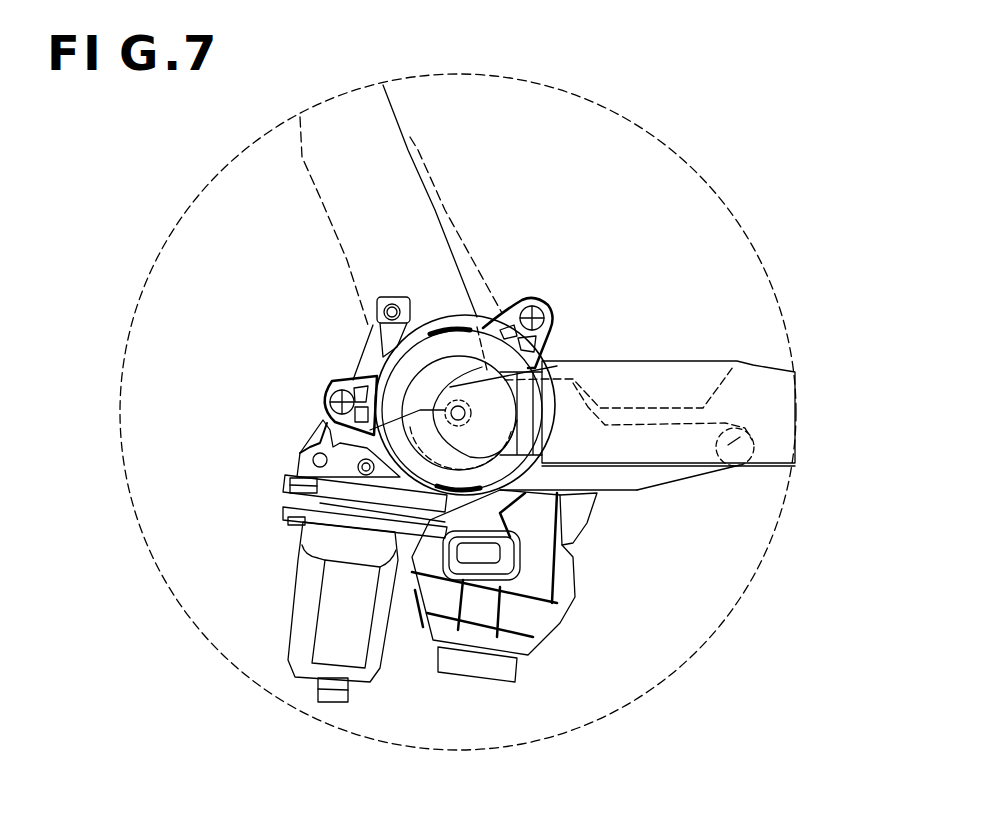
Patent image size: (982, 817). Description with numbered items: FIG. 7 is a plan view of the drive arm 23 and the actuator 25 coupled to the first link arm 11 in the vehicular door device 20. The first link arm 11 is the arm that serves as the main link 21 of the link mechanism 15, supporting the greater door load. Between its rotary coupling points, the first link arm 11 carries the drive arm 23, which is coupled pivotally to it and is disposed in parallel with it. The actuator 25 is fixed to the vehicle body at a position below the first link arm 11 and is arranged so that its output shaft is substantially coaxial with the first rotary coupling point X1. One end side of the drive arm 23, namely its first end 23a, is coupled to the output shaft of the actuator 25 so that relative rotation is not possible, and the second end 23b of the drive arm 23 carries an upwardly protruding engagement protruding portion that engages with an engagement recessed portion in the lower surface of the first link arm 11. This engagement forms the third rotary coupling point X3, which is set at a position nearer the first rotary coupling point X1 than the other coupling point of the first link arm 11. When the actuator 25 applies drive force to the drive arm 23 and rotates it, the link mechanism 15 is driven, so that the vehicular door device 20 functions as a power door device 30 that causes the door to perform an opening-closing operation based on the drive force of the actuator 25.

The first link arm 11 is at (647, 380).
The main link 21 is at (647, 413).
The link mechanism 15 is at (612, 360).
The vehicular door device 20 is at (414, 412).
The power door device 30 is at (172, 569).
The drive arm 23 is at (647, 490).
The first end 23a is at (328, 437).
The second end 23b is at (747, 463).
The actuator 25 is at (283, 495).
The first rotary coupling point X1 is at (458, 410).
The third rotary coupling point X3 is at (730, 447).